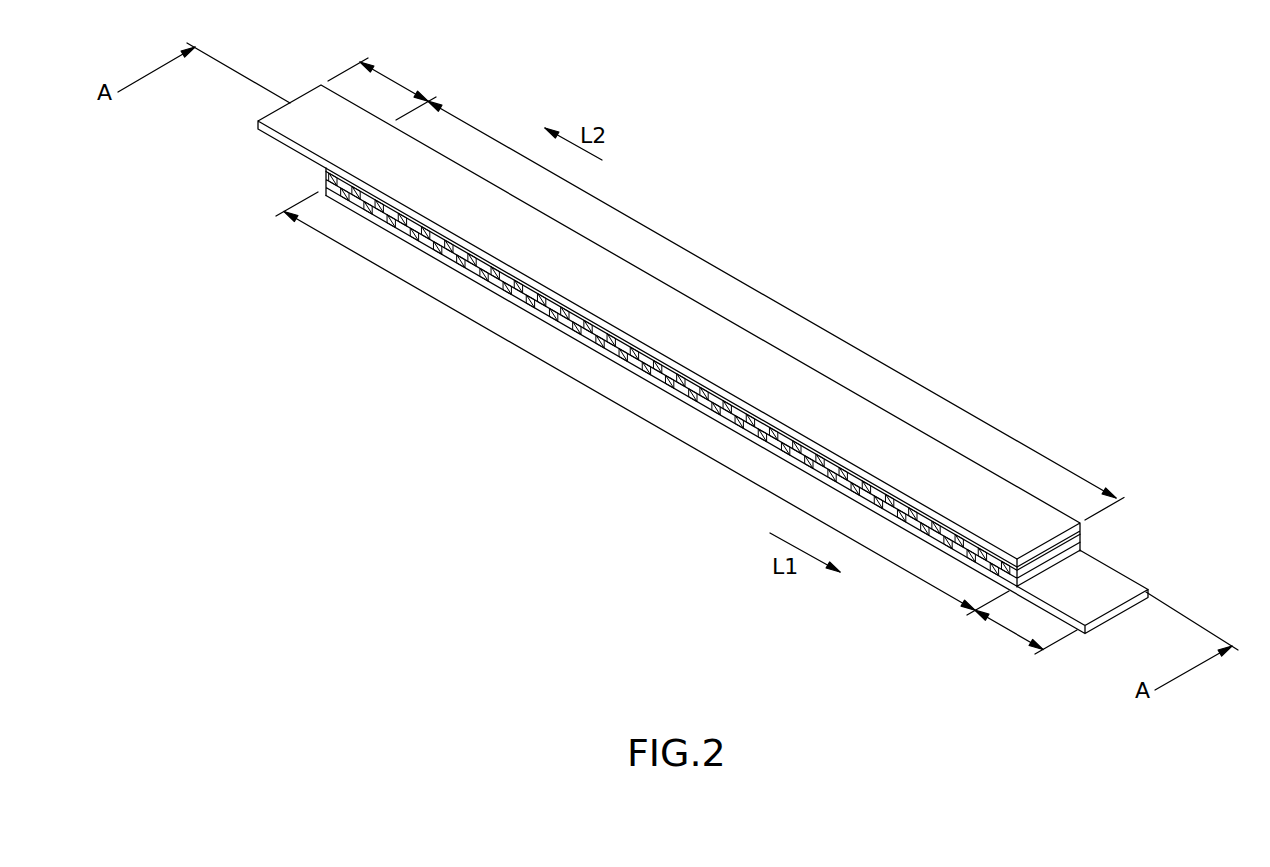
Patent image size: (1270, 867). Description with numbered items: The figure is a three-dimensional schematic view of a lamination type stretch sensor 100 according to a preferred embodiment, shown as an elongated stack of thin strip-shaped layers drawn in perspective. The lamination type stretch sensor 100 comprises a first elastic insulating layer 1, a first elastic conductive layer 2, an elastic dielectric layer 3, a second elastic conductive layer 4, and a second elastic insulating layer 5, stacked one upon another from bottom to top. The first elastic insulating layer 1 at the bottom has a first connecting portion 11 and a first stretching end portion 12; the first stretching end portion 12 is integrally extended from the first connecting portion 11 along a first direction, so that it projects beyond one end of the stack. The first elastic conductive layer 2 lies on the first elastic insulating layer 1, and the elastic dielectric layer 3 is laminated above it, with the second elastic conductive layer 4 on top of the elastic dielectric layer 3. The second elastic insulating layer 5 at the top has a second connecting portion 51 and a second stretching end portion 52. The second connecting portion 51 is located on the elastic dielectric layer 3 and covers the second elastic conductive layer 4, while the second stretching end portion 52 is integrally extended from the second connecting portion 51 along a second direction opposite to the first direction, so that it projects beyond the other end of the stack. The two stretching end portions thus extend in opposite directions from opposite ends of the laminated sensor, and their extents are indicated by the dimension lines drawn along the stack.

The lamination type stretch sensor 100 is at (1097, 378).
The first elastic insulating layer 1 is at (1094, 629).
The first elastic conductive layer 2 is at (1085, 552).
The elastic dielectric layer 3 is at (325, 174).
The second elastic conductive layer 4 is at (1081, 535).
The second elastic insulating layer 5 is at (258, 123).
The first connecting portion 11 is at (630, 414).
The first stretching end portion 12 is at (1011, 632).
The second connecting portion 51 is at (770, 298).
The second stretching end portion 52 is at (394, 80).